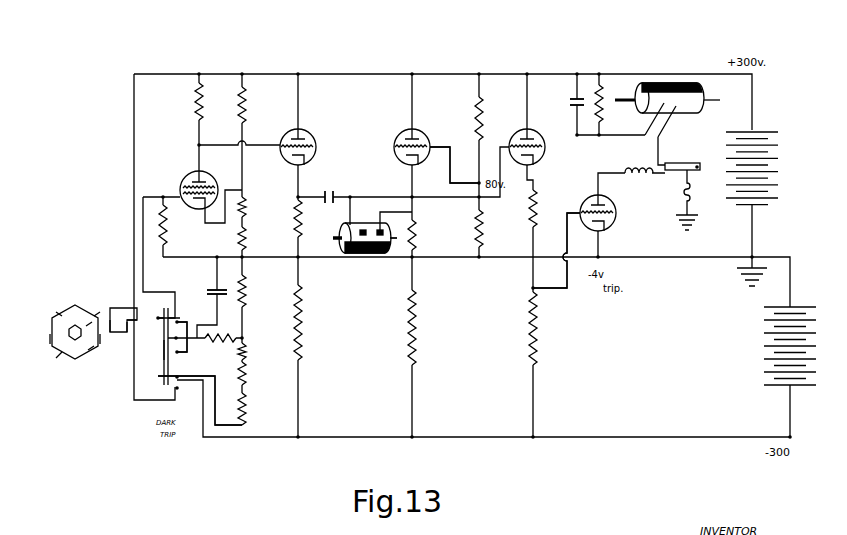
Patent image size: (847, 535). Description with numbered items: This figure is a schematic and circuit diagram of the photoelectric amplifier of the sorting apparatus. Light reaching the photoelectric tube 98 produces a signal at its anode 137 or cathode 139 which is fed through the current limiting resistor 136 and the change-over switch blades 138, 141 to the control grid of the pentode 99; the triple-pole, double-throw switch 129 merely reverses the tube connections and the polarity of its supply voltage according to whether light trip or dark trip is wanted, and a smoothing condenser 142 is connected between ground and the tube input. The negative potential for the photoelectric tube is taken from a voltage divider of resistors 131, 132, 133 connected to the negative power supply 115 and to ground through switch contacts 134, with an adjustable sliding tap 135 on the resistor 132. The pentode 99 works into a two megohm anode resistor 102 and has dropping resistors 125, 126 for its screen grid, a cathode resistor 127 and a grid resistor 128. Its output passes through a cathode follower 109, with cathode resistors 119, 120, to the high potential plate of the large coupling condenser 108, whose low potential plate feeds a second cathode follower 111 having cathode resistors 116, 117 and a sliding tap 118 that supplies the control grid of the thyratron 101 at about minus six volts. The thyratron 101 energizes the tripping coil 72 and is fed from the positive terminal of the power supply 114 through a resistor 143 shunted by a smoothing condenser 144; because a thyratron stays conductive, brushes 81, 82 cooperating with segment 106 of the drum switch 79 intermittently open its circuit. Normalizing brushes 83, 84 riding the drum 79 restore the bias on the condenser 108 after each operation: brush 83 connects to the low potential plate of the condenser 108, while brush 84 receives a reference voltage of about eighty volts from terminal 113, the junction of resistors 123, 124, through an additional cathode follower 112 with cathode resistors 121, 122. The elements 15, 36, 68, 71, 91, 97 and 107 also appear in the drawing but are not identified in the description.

The electrode lead 15 is at (337, 242).
The switch 36 is at (78, 320).
The spring 68 is at (691, 201).
The contact 71 is at (662, 172).
The tripping coil 72 is at (633, 178).
The drum switch 79 is at (390, 250).
The brush 81 is at (647, 124).
The brush 82 is at (663, 128).
The normalizing brush 83 is at (363, 230).
The normalizing brush 84 is at (382, 230).
The contact 91 is at (66, 314).
The contact 97 is at (96, 316).
The photoelectric tube 98 is at (124, 345).
The pentode tube 99 is at (208, 173).
The thyratron tube 101 is at (583, 199).
The anode resistor 102 is at (203, 110).
The contact segment 106 is at (672, 95).
The phototube 107 is at (368, 255).
The coupling condenser 108 is at (322, 195).
The cathode follower 109 is at (283, 140).
The second cathode follower 111 is at (518, 132).
The additional cathode follower 112 is at (397, 133).
The reference voltage terminal 113 is at (478, 183).
The power supply 114 is at (780, 166).
The negative power supply 115 is at (762, 360).
The cathode resistor 116 is at (538, 208).
The cathode resistor 117 is at (538, 326).
The sliding tap 118 is at (531, 290).
The cathode resistor 119 is at (295, 217).
The cathode resistor 120 is at (295, 327).
The cathode resistor 121 is at (418, 234).
The cathode resistor 122 is at (418, 316).
The voltage divider resistor 123 is at (475, 117).
The voltage divider resistor 124 is at (483, 229).
The dropping resistor 125 is at (262, 98).
The dropping resistor 126 is at (246, 208).
The cathode resistor 127 is at (246, 243).
The grid resistor 128 is at (167, 225).
The triple-pole double-throw switch 129 is at (158, 348).
The voltage divider resistor 131 is at (246, 290).
The voltage divider resistor 132 is at (246, 350).
The voltage divider resistor 133 is at (246, 393).
The switch contacts 134 is at (178, 389).
The sliding tap 135 is at (240, 352).
The current limiting resistor 136 is at (228, 340).
The anode 137 is at (125, 340).
The change-over switch blade 138 is at (162, 318).
The cathode 139 is at (124, 340).
The change-over switch blade 141 is at (160, 345).
The smoothing condenser 142 is at (220, 288).
The resistor 143 is at (605, 90).
The smoothing condenser 144 is at (574, 92).